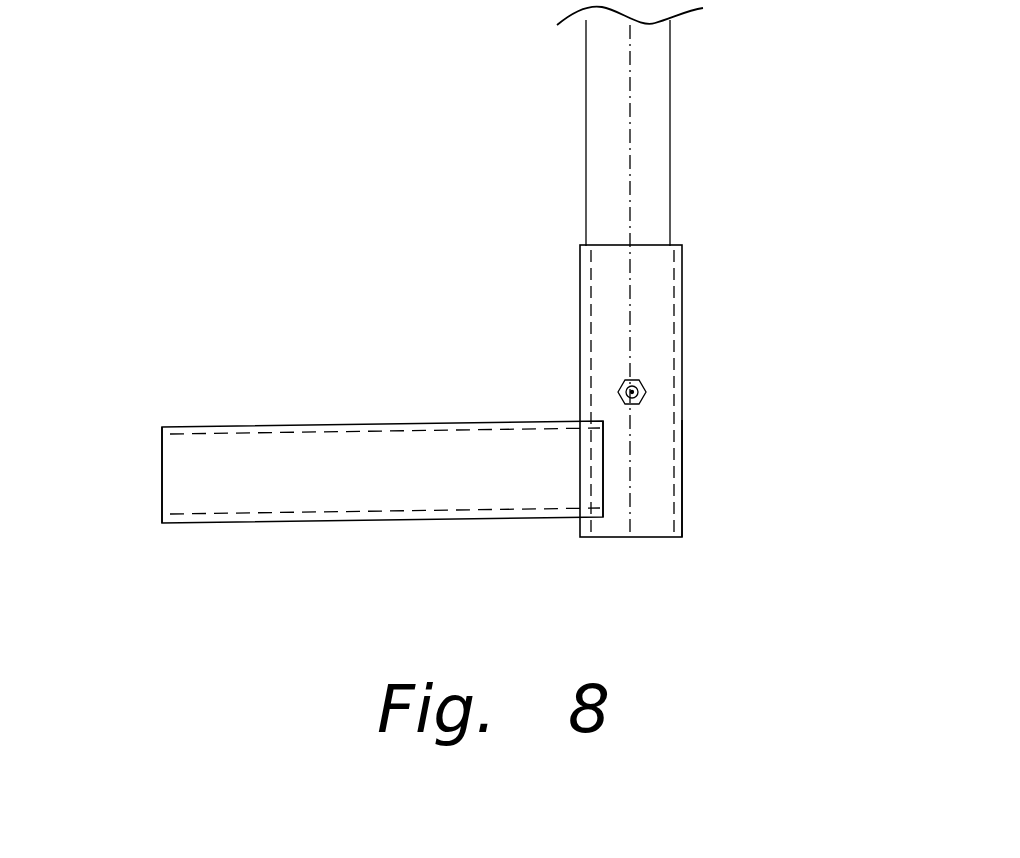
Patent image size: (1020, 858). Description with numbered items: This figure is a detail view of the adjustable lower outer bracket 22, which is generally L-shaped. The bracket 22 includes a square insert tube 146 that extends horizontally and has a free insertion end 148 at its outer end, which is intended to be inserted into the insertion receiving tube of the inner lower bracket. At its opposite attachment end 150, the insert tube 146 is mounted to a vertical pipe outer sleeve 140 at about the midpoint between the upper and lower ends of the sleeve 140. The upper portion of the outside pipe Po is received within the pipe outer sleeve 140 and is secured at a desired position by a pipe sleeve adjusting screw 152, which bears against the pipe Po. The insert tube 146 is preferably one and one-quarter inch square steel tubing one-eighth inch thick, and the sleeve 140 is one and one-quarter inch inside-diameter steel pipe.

The outside pipe Po is at (700, 130).
The adjustable lower outer bracket 22 is at (708, 297).
The pipe outer sleeve 140 is at (685, 492).
The pipe sleeve adjusting screw 152 is at (642, 383).
The square insert tube 146 is at (237, 425).
The free insertion end 148 is at (162, 463).
The attachment end 150 is at (603, 468).